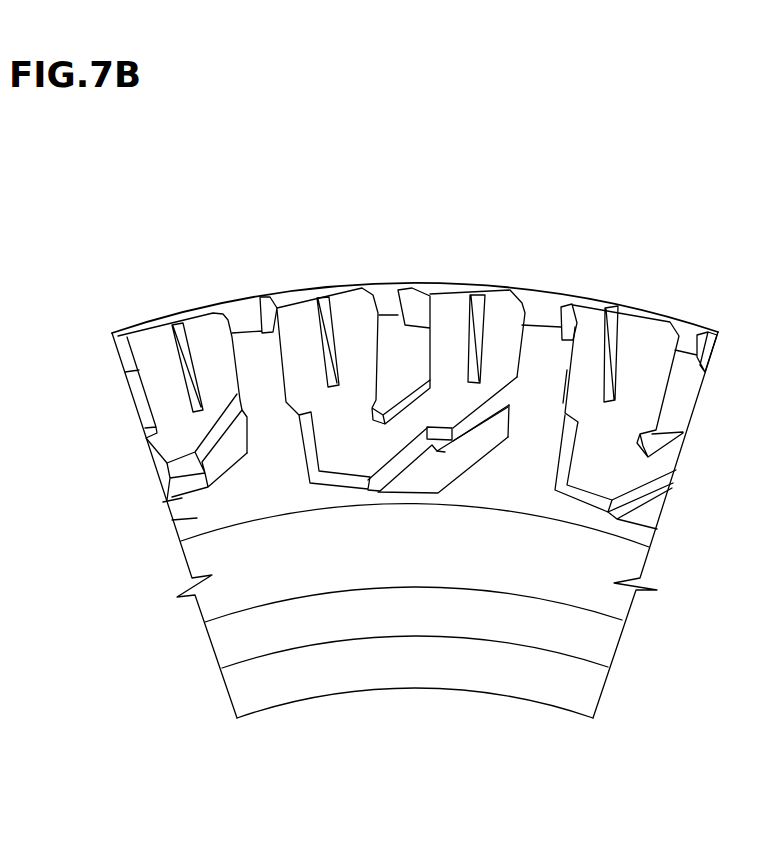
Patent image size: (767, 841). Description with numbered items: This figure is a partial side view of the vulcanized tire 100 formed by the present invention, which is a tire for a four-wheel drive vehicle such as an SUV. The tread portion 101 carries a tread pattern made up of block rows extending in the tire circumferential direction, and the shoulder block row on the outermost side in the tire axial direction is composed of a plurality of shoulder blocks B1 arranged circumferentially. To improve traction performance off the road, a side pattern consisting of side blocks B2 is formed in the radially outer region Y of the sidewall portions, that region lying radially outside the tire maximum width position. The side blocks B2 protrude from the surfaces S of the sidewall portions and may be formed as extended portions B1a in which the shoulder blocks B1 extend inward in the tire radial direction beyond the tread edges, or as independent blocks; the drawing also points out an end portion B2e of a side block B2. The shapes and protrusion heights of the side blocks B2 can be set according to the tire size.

The tire 100 is at (562, 248).
The tread portion 101 is at (384, 284).
The shoulder block B1 is at (296, 302).
The extended portion B1a is at (172, 442).
The side block B2 is at (442, 472).
The end portion of second block B2e is at (410, 498).
The surface S is at (525, 460).
The radially outer region Y is at (735, 338).